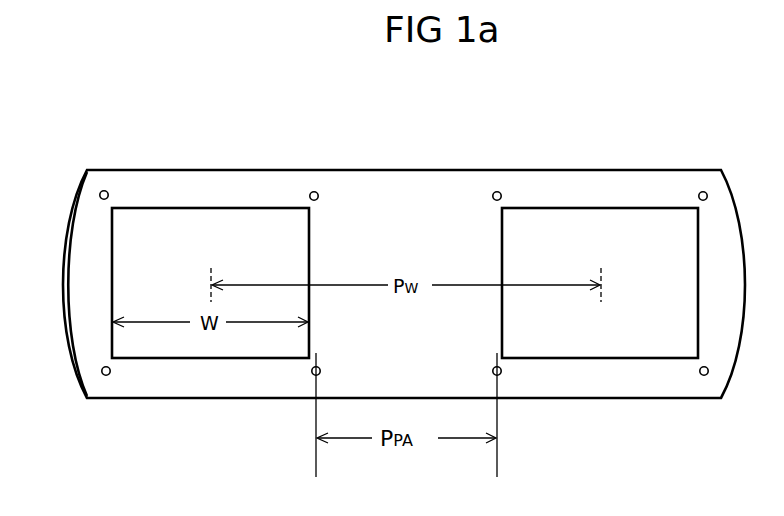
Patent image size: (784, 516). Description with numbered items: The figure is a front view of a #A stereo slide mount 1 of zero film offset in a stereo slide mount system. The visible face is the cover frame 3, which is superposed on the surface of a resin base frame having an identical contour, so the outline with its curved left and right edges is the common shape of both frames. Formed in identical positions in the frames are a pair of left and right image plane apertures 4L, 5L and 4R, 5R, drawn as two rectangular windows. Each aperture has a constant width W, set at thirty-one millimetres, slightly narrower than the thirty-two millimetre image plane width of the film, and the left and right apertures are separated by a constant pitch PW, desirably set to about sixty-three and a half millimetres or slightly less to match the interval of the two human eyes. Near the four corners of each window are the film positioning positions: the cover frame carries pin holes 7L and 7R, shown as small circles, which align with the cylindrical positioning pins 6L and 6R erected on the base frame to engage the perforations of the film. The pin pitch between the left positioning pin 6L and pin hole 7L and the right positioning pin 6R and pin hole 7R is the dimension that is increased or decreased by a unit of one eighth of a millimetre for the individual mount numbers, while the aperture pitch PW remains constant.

The stereo slide mount 1 is at (403, 160).
The cover frame 3 is at (90, 226).
The left aperture 4L is at (210, 242).
The left aperture 5L is at (244, 212).
The right aperture 4R is at (600, 242).
The right aperture 5R is at (621, 214).
The left positioning pin 6L is at (226, 289).
The left pin hole 7L is at (105, 190).
The right positioning pin 6R is at (613, 289).
The right pin hole 7R is at (496, 191).